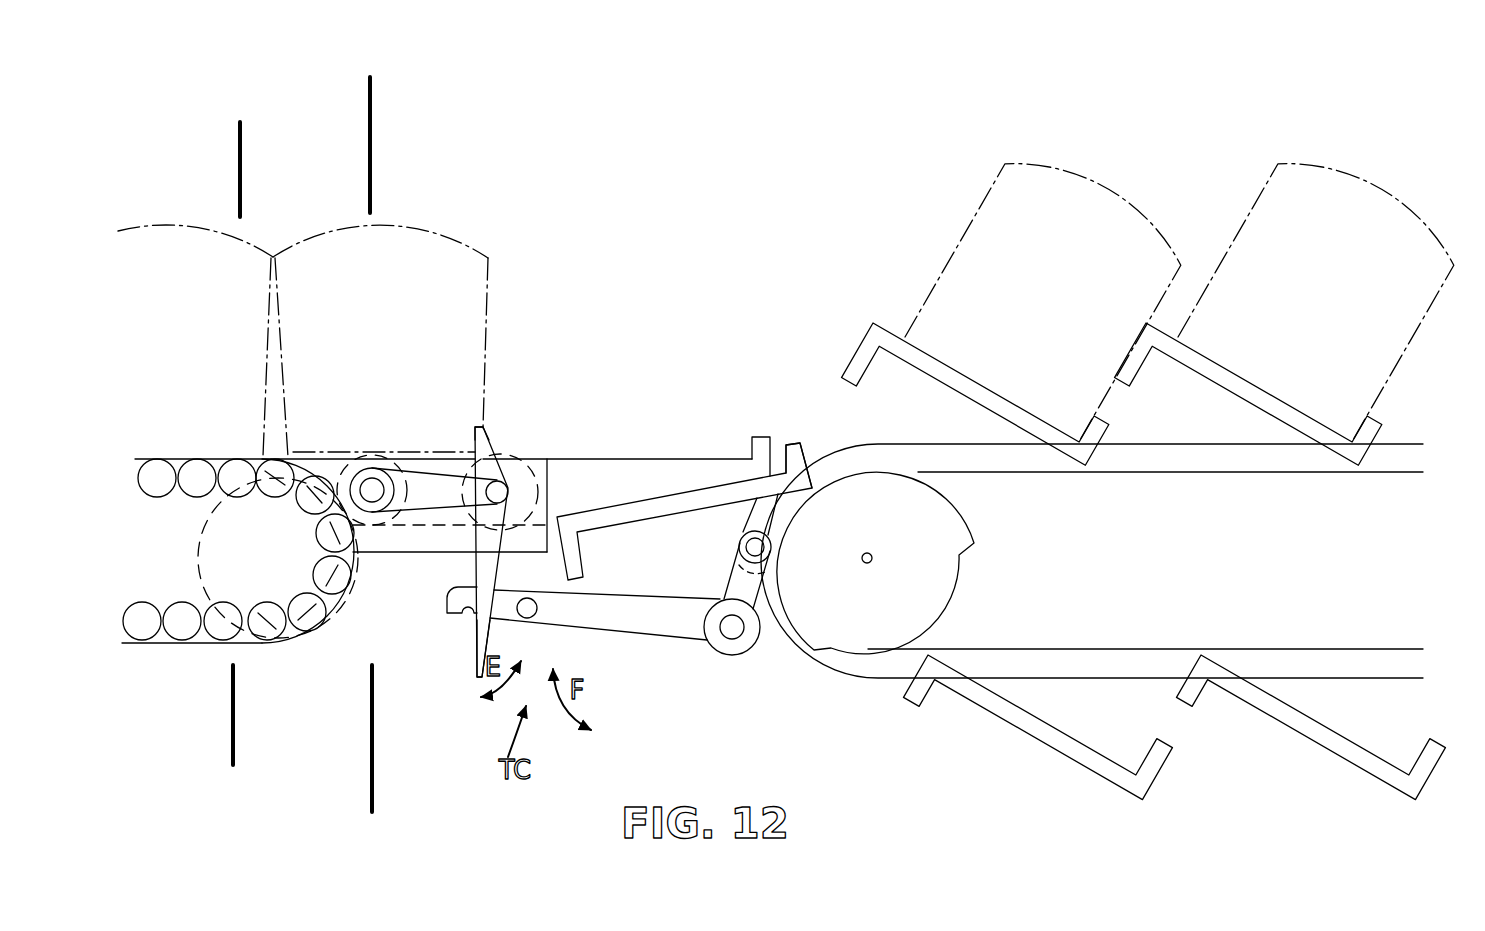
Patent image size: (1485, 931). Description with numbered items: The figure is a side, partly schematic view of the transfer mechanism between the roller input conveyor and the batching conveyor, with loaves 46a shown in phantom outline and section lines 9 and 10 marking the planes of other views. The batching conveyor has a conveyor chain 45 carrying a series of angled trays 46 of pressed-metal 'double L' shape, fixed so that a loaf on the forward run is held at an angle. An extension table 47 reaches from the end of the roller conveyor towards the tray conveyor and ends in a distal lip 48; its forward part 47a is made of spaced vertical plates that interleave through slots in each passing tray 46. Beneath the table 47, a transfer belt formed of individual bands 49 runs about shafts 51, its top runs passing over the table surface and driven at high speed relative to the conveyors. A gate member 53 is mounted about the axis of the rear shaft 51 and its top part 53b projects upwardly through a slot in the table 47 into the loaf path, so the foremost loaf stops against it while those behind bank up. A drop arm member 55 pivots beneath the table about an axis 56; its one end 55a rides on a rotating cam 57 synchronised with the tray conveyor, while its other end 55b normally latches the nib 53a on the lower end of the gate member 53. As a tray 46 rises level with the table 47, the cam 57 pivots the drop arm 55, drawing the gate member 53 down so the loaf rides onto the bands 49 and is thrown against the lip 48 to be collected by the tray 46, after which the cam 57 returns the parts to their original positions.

The section line 9- 9 is at (236, 132).
The section line 10- 10 is at (366, 88).
The conveyor chain 45 is at (1190, 460).
The angled trays 46 is at (947, 377).
The loaf in phantom outline 46a is at (1085, 213).
The extension table 47 is at (535, 460).
The forward part of the table 47a is at (648, 490).
The distal lip 48 is at (760, 440).
The transfer belt bands 49 is at (437, 455).
The shaft 51 is at (505, 470).
The gate member 53 is at (540, 518).
The nib 53a is at (475, 612).
The top part of the gate member 53b is at (483, 443).
The drop arm member 55 is at (612, 615).
The end of the drop arm 55a is at (739, 547).
The other end of the drop arm 55b is at (457, 613).
The pivot axis 56 is at (737, 635).
The rotating cam 57 is at (937, 578).